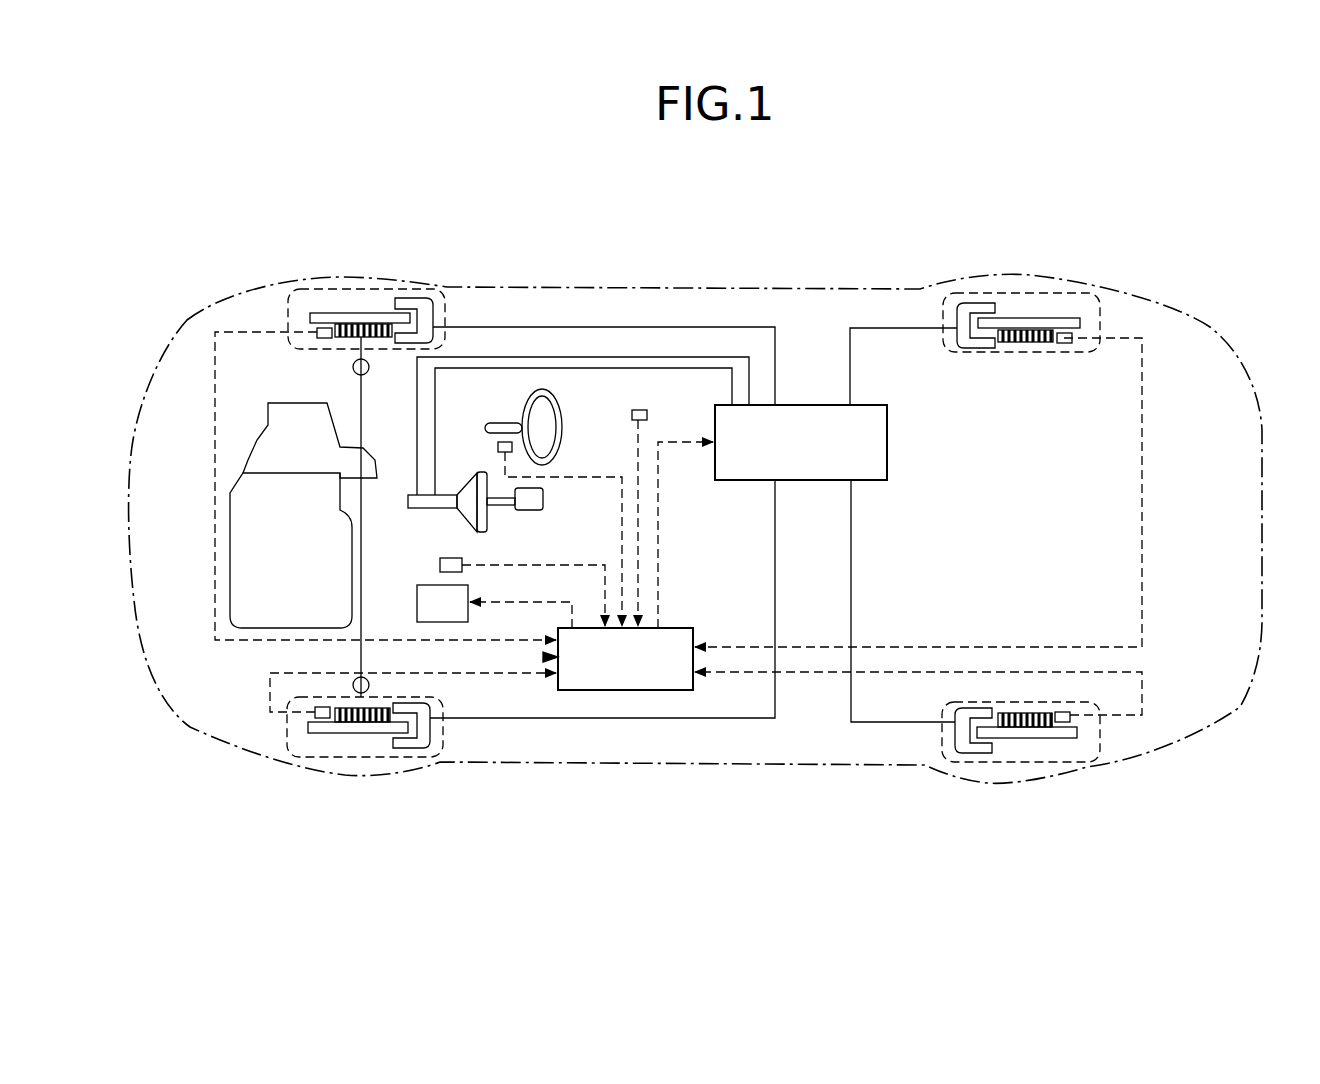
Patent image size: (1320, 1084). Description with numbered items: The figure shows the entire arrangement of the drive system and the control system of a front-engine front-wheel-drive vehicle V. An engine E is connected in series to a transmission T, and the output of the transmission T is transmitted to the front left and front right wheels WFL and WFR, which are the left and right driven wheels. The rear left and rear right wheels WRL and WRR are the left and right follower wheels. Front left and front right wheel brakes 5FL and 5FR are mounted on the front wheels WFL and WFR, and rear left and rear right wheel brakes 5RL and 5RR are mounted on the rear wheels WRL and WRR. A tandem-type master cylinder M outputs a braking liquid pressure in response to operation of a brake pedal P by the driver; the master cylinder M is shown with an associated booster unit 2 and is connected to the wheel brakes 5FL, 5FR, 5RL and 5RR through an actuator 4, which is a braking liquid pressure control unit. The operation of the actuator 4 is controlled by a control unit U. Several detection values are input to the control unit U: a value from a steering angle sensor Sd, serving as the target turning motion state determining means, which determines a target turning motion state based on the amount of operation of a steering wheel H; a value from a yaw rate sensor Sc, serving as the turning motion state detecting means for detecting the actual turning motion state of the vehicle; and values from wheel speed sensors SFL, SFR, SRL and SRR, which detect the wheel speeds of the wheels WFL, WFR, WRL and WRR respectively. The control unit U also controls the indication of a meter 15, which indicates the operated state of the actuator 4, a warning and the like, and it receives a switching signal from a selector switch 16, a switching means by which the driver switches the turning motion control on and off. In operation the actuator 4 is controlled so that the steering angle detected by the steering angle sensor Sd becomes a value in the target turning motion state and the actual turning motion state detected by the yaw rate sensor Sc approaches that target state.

The vehicle V is at (691, 251).
The front right wheel WFR is at (333, 290).
The front left wheel WFL is at (337, 758).
The rear right wheel WRR is at (1012, 292).
The rear left wheel WRL is at (1006, 763).
The front right wheel brake 5FR is at (414, 296).
The front left wheel brake 5FL is at (419, 757).
The rear right wheel brake 5RR is at (956, 296).
The rear left wheel brake 5RL is at (965, 756).
The wheel speed sensor SFR is at (316, 334).
The wheel speed sensor SFL is at (314, 713).
The wheel speed sensor SRR is at (1064, 344).
The wheel speed sensor SRL is at (1062, 723).
The transmission T is at (308, 458).
The engine E is at (295, 580).
The master cylinder M is at (423, 504).
The brake booster 2 is at (483, 523).
The brake pedal P is at (530, 500).
The steering wheel H is at (562, 435).
The steering angle sensor Sd is at (498, 447).
The yaw rate sensor Sc is at (636, 410).
The actuator 4 is at (812, 466).
The control unit U is at (640, 684).
The selector switch 16 is at (458, 558).
The meter 15 is at (418, 601).